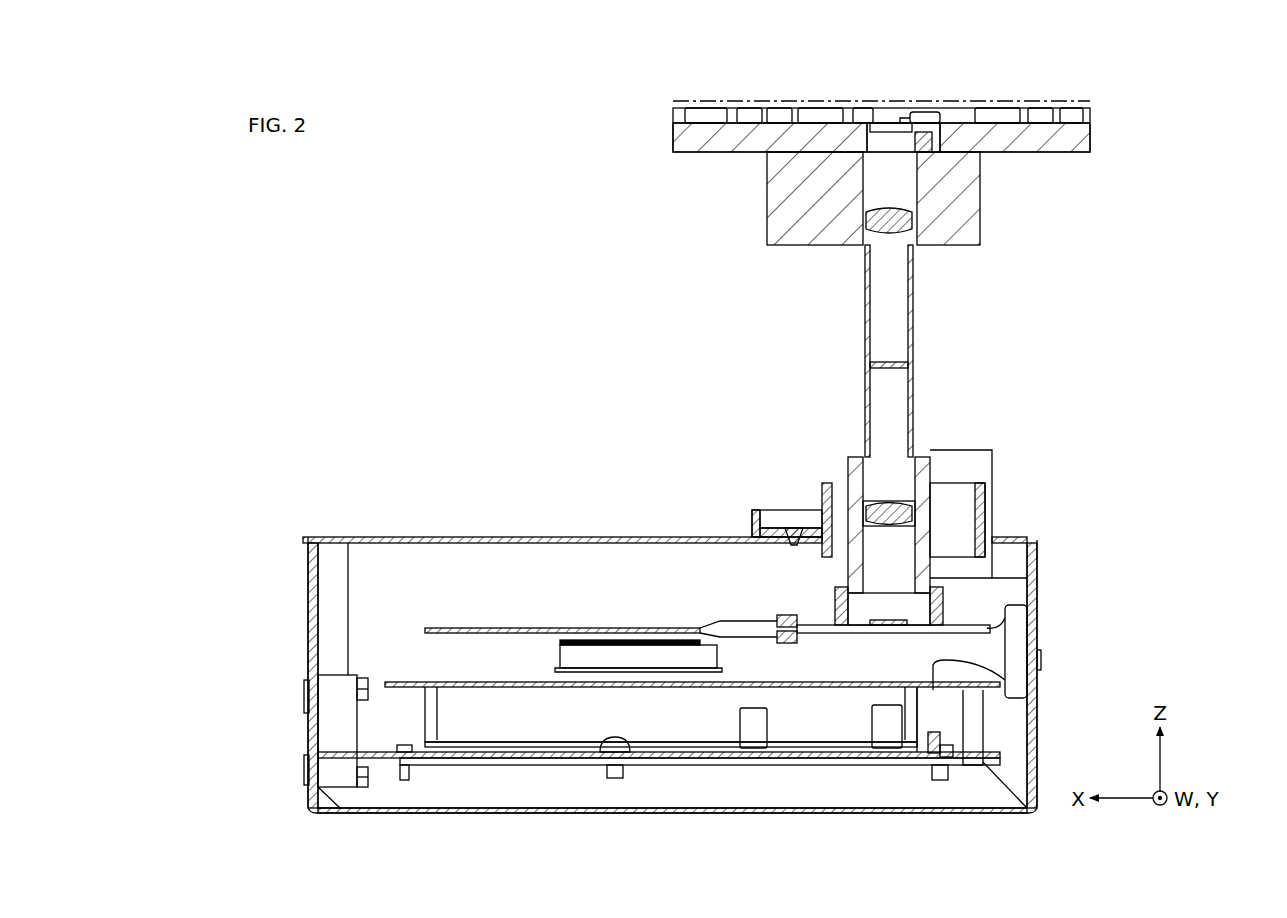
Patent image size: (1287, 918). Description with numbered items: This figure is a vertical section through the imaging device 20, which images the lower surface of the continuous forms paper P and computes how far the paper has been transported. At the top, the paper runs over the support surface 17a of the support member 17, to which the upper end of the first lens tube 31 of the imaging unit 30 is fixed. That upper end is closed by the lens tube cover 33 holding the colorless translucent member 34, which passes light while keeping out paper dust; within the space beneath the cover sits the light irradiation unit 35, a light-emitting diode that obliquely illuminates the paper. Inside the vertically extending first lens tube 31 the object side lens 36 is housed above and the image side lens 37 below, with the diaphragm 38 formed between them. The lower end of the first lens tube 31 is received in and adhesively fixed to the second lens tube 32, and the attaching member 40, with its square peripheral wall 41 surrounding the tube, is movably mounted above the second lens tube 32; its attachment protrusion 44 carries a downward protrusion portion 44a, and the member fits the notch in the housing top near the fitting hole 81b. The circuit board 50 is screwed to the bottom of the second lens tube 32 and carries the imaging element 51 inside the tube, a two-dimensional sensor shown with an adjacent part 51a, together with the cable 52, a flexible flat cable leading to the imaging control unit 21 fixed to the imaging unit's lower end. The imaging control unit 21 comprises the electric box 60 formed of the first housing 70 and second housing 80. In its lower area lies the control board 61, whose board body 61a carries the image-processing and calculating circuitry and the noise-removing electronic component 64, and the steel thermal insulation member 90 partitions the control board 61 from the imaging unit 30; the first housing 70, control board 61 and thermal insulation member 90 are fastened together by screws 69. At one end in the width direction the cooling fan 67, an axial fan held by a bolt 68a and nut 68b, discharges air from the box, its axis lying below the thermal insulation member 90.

The continuous forms paper P is at (1010, 101).
The support member 17 is at (670, 158).
The support surface 17a is at (730, 108).
The imaging device 20 is at (437, 255).
The imaging control unit 21 is at (292, 468).
The imaging unit 30 is at (763, 303).
The first lens tube 31 is at (913, 285).
The second lens tube 32 is at (835, 605).
The lens tube cover 33 is at (928, 114).
The translucent member 34 is at (882, 125).
The light irradiation unit 35 is at (912, 142).
The object side lens 36 is at (889, 235).
The image side lens 37 is at (890, 528).
The diaphragm 38 is at (893, 365).
The attaching member 40 is at (740, 502).
The peripheral wall 41 is at (975, 545).
The attachment protrusion 44 is at (752, 522).
The protrusion portion 44a is at (795, 545).
The circuit board 50 is at (1025, 612).
The imaging element 51 is at (880, 634).
The rod collar 51a is at (905, 625).
The cable 52 is at (662, 628).
The electric box 60 is at (358, 537).
The control board 61 is at (475, 767).
The board body 61a is at (517, 765).
The electronic component 64 is at (883, 733).
The cooling fan 67 is at (348, 660).
The bolt 68a is at (305, 692).
The nut 68b is at (368, 685).
The screw 69 is at (405, 780).
The first housing 70 is at (737, 813).
The second housing 80 is at (505, 537).
The fitting hole 81b is at (827, 520).
The thermal insulation member 90 is at (770, 683).